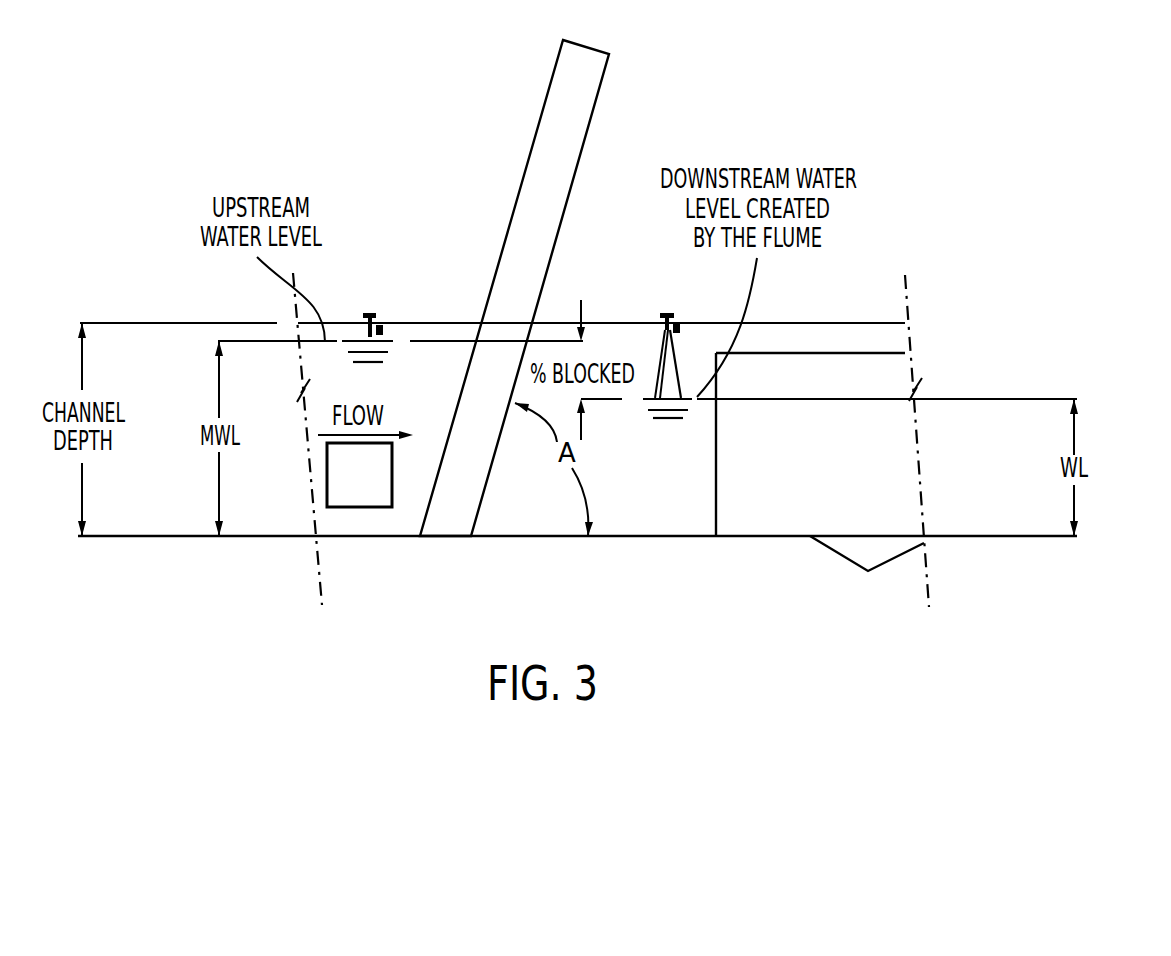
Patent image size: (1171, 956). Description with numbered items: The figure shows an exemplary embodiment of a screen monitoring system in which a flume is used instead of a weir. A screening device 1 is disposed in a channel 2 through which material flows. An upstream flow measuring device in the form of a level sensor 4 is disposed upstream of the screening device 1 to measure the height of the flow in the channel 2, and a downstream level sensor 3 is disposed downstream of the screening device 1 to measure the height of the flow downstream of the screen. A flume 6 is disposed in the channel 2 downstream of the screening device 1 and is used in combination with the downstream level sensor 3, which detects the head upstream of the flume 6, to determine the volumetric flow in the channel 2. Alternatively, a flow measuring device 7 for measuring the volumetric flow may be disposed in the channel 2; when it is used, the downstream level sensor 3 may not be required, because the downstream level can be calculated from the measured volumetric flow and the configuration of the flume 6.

The screening device 1 is at (602, 88).
The channel 2 is at (277, 517).
The downstream level sensor 3 is at (665, 315).
The level sensor 4 is at (370, 313).
The flume 6 is at (772, 512).
The flow measuring device 7 is at (358, 515).